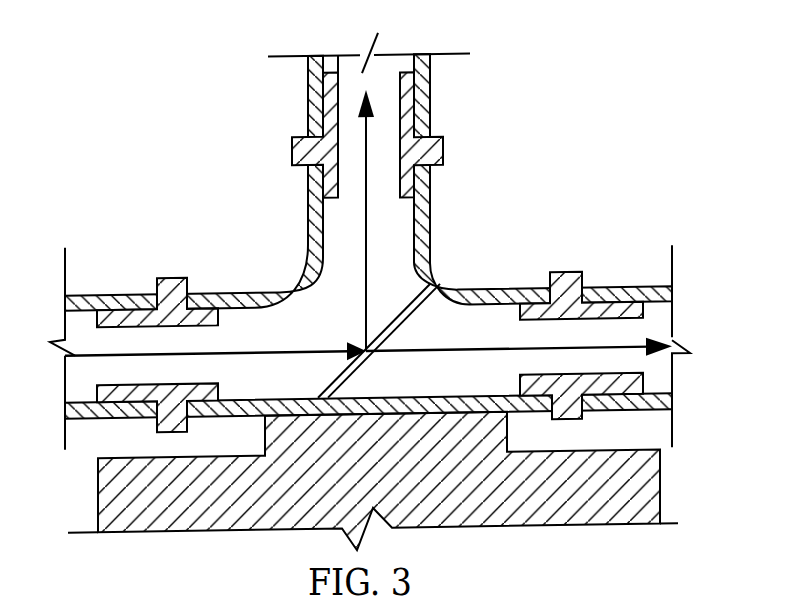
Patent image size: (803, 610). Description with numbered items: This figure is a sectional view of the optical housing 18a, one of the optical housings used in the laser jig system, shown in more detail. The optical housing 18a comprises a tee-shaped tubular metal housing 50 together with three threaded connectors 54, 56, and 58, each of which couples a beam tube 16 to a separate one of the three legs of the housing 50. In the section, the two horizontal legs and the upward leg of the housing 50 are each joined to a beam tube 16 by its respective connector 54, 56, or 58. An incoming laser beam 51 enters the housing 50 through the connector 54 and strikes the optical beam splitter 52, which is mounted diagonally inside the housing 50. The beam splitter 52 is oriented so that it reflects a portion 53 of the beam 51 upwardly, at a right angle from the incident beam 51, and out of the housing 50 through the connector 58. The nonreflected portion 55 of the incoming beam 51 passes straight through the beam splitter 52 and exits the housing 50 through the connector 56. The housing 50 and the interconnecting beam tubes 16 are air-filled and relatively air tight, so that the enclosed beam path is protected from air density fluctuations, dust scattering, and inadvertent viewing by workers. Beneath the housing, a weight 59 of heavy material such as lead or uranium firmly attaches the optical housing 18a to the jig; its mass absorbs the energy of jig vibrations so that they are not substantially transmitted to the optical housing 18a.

The optical housing 18a is at (150, 127).
The beam tube 16 is at (430, 103).
The tee-shaped tubular metal housing 50 is at (475, 286).
The incoming laser beam 51 is at (157, 354).
The optical beam splitter 52 is at (367, 358).
The reflected portion of beam 53 is at (363, 263).
The threaded connector 54 is at (172, 275).
The nonreflected portion of beam 55 is at (477, 355).
The threaded connector 56 is at (567, 275).
The threaded connector 58 is at (443, 161).
The weight 59 is at (660, 485).